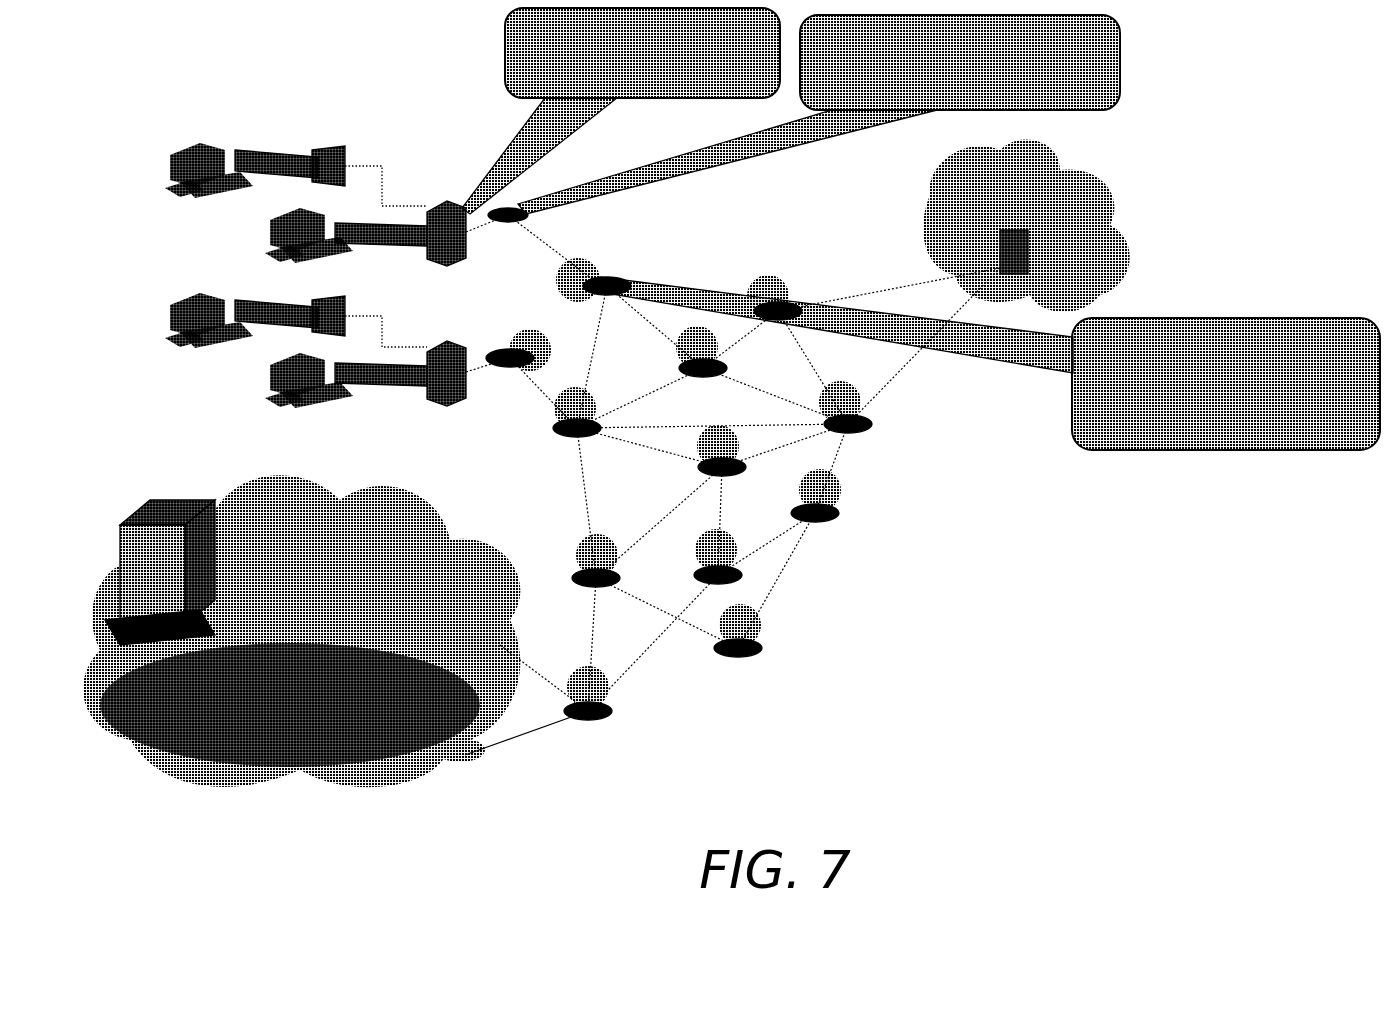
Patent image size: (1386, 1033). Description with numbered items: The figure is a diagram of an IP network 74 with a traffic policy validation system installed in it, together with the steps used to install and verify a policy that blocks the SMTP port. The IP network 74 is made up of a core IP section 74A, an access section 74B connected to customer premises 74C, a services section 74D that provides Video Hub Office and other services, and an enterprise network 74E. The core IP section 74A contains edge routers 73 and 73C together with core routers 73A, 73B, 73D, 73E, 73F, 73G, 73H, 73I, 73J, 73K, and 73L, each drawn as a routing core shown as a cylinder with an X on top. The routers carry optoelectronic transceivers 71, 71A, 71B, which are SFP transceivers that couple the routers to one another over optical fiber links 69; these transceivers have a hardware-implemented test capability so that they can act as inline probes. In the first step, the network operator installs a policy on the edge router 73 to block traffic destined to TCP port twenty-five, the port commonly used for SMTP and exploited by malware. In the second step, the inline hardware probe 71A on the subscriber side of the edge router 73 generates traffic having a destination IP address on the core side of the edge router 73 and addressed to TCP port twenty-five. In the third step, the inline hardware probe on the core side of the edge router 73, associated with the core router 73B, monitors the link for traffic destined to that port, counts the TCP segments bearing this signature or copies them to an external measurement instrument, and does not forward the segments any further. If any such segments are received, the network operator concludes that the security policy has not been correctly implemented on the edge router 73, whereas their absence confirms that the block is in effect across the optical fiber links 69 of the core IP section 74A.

The optical fiber link 69 is at (553, 253).
The optoelectronic transceiver 71 is at (780, 287).
The optoelectronic transceiver (inline hardware probe) 71A is at (466, 240).
The optoelectronic transceiver 71B is at (568, 290).
The edge router 73 is at (508, 224).
The core router 73A is at (606, 283).
The core router 73B is at (563, 440).
The edge router 73C is at (509, 369).
The core router 73D is at (777, 320).
The core router 73E is at (582, 590).
The core router 73F is at (690, 378).
The core router 73G is at (817, 523).
The core router 73H is at (730, 660).
The core router 73I is at (590, 723).
The core router 73J is at (702, 472).
The core router 73K is at (862, 430).
The core router 73L is at (708, 579).
The IP network 74 is at (731, 397).
The core IP section 74A is at (732, 496).
The access section 74B is at (472, 262).
The customer premises 74C is at (200, 251).
The services section 74D is at (1063, 276).
The enterprise network 74E is at (311, 681).